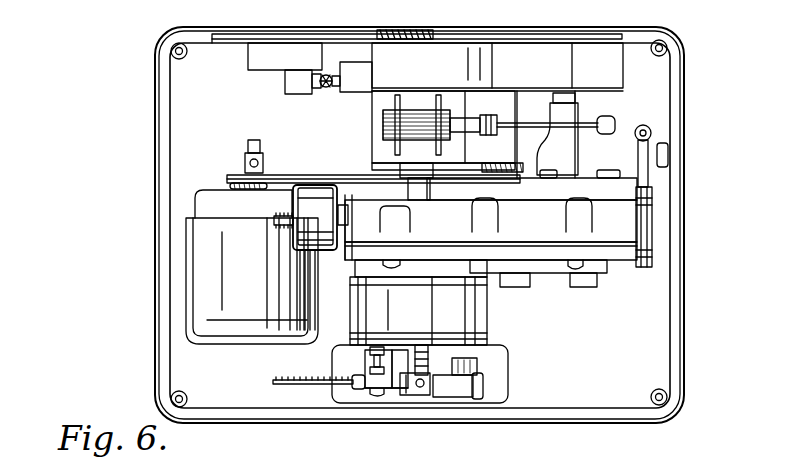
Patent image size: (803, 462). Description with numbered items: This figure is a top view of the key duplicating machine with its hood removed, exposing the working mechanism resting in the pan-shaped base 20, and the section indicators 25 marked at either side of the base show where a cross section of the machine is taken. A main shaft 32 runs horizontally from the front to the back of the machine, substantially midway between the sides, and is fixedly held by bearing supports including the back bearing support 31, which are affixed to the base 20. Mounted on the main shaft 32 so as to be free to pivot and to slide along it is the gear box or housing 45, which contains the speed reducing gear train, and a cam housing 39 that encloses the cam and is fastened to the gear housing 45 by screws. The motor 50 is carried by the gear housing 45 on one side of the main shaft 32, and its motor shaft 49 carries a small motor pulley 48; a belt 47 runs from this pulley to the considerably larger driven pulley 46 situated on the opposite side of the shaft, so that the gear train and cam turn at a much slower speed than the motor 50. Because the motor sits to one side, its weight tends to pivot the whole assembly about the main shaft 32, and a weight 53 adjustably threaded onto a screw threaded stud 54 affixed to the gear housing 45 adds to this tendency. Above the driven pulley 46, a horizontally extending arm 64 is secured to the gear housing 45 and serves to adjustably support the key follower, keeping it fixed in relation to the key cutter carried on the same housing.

The pan-shaped base 20 is at (655, 331).
The section line 25- 25 is at (136, 154).
The back bearing support 31 is at (408, 395).
The main shaft 32 is at (430, 372).
The cam housing 39 is at (498, 288).
The gear box or housing 45 is at (645, 220).
The pulley 46 is at (628, 175).
The belt 47 is at (328, 183).
The motor pulley 48 is at (237, 177).
The motor shaft 49 is at (256, 147).
The motor 50 is at (252, 267).
The weight 53 is at (315, 257).
The screw threaded stud 54 is at (284, 218).
The horizontally extending arm 64 is at (565, 154).